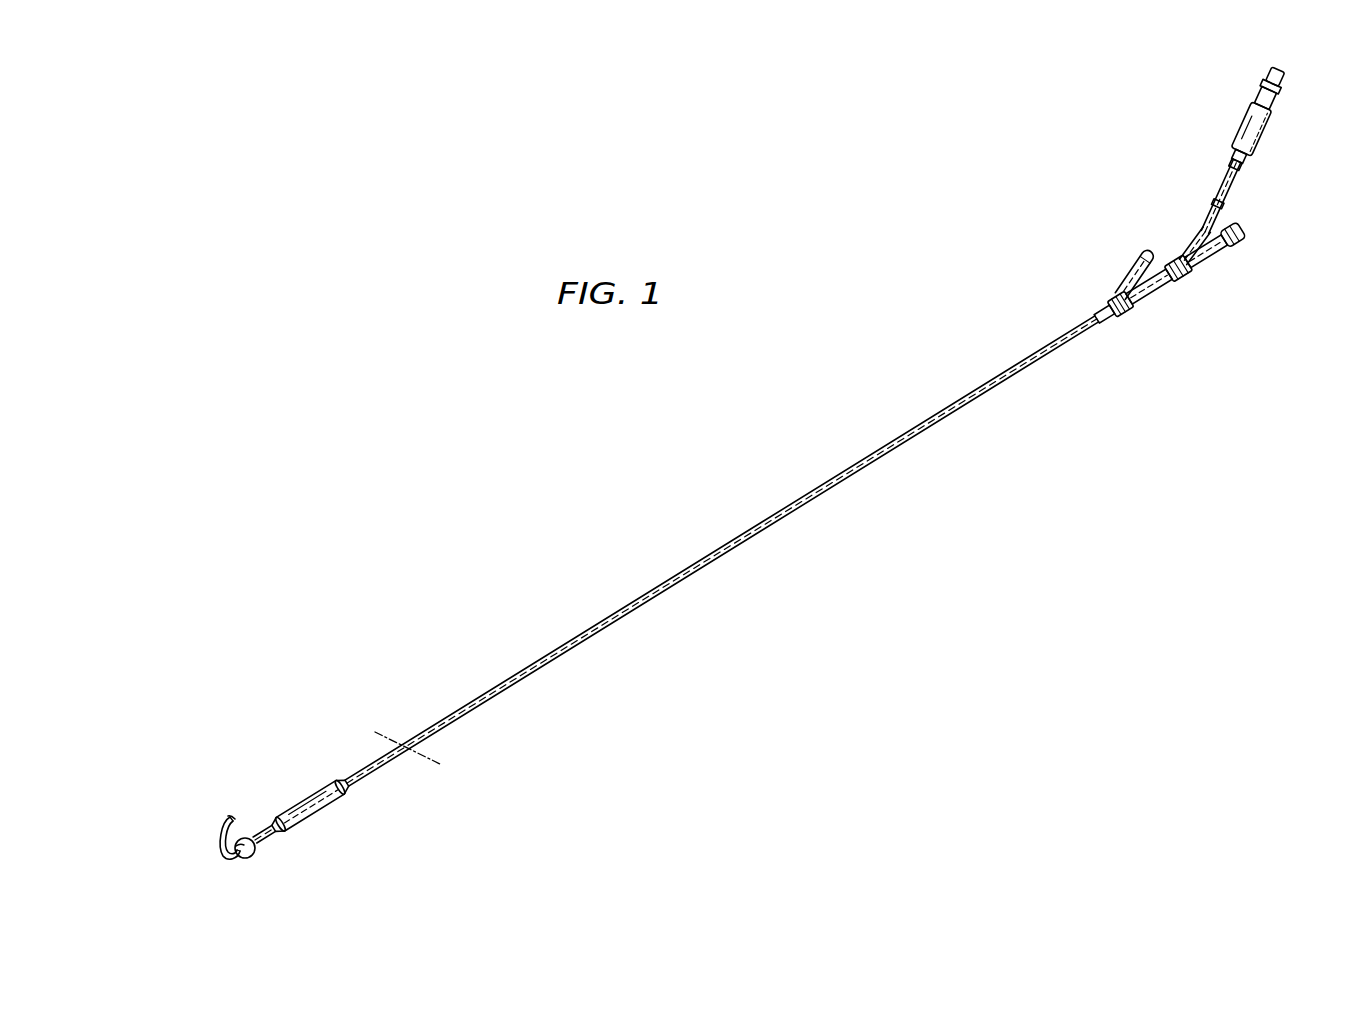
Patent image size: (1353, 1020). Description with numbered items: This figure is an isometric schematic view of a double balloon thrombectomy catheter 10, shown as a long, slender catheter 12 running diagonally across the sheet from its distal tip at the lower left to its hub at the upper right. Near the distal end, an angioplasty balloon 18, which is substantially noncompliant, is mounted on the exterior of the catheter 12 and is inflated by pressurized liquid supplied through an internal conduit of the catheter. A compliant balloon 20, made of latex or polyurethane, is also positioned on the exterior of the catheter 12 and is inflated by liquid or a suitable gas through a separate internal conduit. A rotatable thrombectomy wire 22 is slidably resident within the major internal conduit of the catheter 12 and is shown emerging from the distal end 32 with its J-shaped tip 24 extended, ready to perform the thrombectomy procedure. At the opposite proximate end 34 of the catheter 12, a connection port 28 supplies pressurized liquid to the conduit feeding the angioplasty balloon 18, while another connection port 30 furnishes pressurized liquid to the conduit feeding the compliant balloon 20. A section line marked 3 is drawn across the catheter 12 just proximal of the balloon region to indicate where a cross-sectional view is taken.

The section line 3- 3 is at (462, 758).
The double balloon thrombectomy catheter 10 is at (744, 486).
The catheter 12 is at (877, 458).
The angioplasty balloon 18 is at (327, 808).
The balloon 20 is at (236, 845).
The rotatable thrombectomy wire 22 is at (223, 842).
The J-shaped tip 24 is at (222, 823).
The connection port 28 is at (1199, 216).
The connection port 30 is at (1139, 271).
The distal end 32 is at (344, 754).
The proximate end 34 is at (1238, 250).